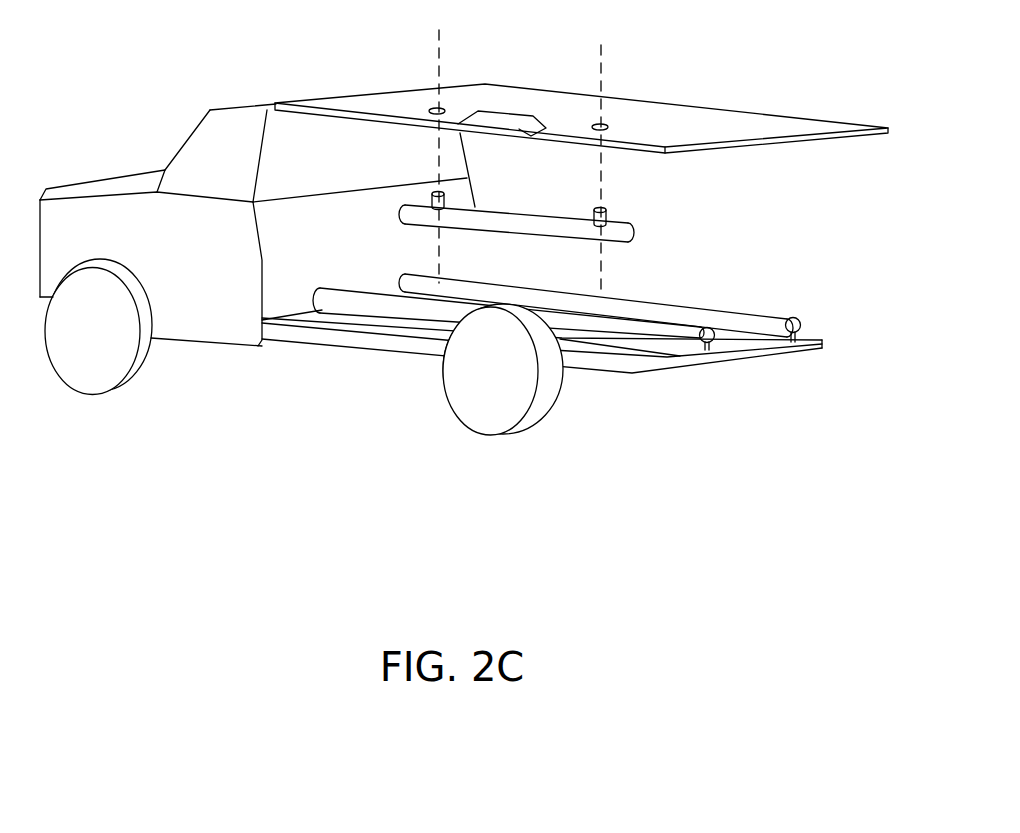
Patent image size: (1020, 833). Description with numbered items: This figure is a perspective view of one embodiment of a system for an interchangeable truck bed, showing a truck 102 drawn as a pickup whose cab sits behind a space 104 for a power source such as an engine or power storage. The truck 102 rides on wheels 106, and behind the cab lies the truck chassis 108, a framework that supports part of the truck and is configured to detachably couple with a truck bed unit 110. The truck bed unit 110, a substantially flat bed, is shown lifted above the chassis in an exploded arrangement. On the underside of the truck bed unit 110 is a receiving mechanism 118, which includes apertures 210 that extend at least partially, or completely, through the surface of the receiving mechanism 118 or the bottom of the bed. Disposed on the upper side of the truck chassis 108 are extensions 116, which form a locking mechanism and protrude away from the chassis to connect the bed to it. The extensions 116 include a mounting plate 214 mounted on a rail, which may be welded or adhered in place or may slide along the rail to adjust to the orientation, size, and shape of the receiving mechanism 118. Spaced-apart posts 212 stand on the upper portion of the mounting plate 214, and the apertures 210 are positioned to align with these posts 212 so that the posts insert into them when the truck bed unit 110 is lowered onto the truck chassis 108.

The truck 102 is at (244, 69).
The space for a power source 104 is at (113, 180).
The wheels 106 is at (148, 360).
The truck chassis 108 is at (325, 337).
The truck bed unit 110 is at (738, 110).
The extensions 116 is at (560, 263).
The receiving mechanism 118 is at (581, 148).
The apertures 210 is at (446, 109).
The post 212 is at (446, 200).
The mounting plate 214 is at (505, 233).